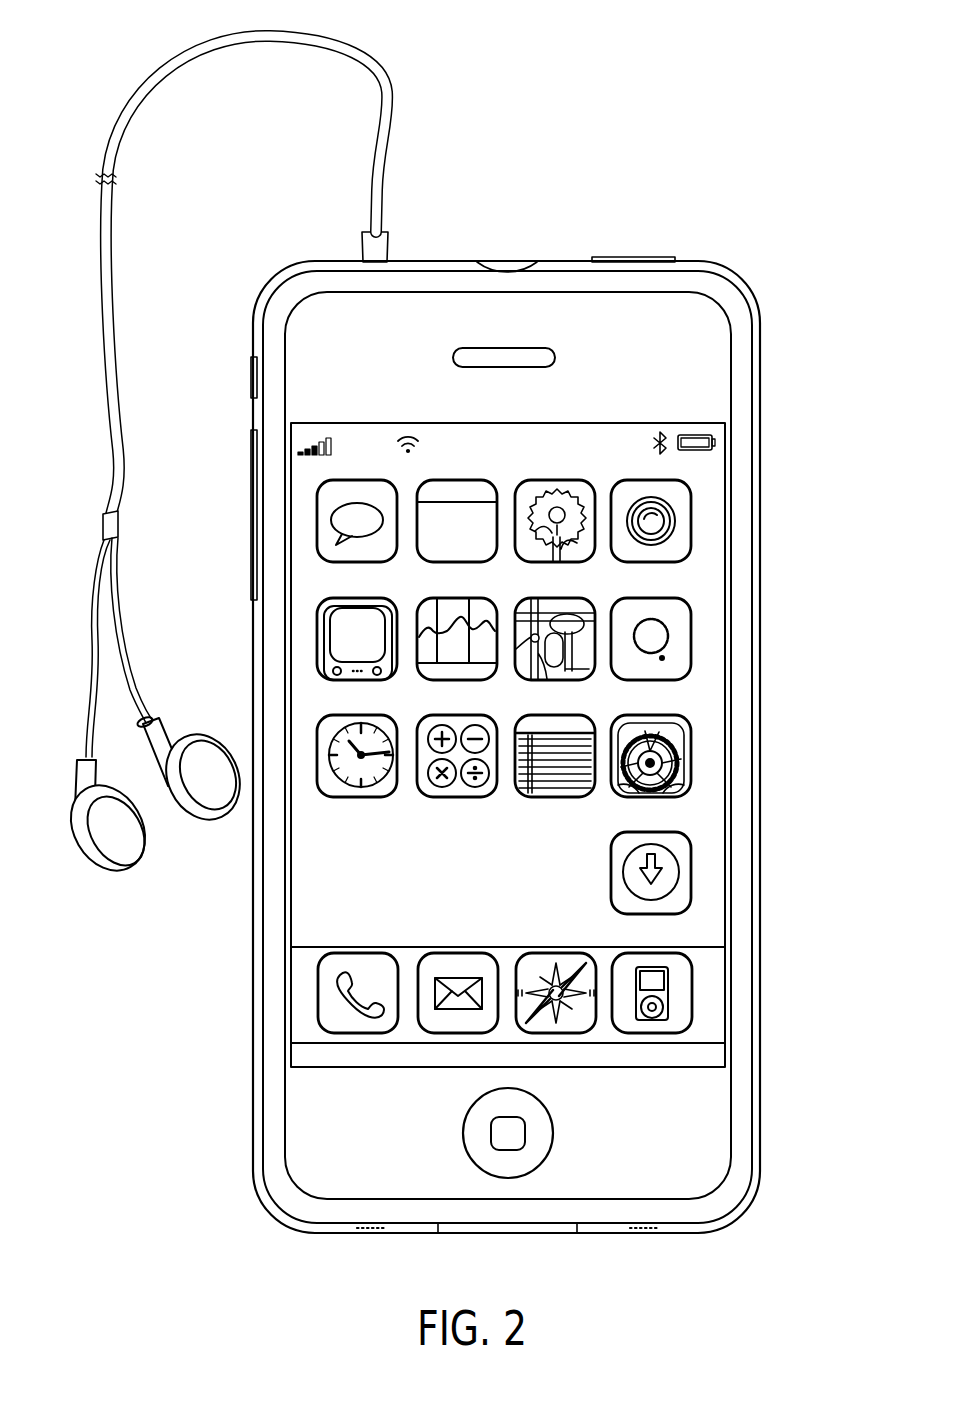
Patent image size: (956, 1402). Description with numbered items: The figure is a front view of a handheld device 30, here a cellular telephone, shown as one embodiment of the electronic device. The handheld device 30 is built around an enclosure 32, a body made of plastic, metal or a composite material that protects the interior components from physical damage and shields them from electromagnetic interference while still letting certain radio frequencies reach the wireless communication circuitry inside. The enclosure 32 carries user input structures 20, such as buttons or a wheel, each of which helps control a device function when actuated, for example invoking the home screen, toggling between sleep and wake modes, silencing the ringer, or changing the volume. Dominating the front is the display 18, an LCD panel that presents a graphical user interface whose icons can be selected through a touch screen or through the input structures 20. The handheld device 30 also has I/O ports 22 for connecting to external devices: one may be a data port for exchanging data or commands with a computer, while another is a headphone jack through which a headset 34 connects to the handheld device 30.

The display 18 is at (713, 850).
The user input structures 20 is at (637, 257).
The I/O ports 22 is at (393, 243).
The handheld device 30 is at (221, 460).
The enclosure 32 is at (760, 553).
The headset 34 is at (381, 135).